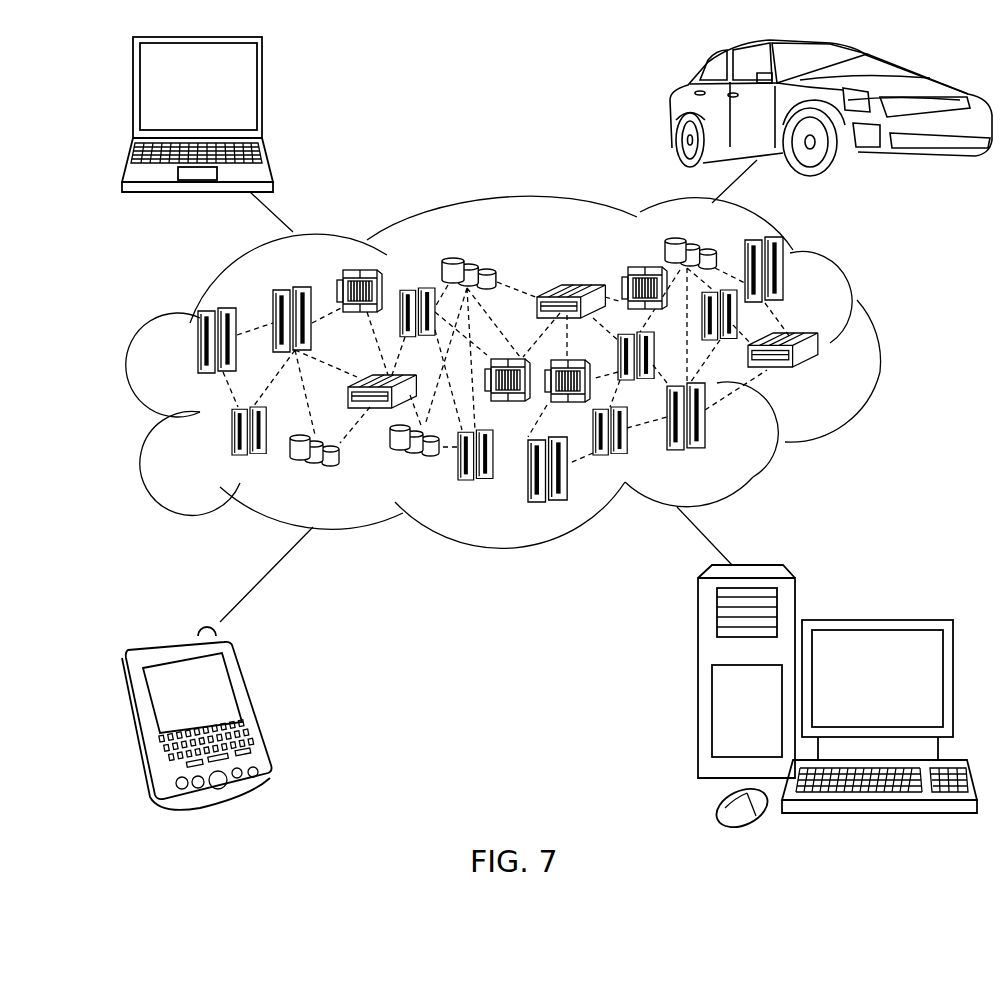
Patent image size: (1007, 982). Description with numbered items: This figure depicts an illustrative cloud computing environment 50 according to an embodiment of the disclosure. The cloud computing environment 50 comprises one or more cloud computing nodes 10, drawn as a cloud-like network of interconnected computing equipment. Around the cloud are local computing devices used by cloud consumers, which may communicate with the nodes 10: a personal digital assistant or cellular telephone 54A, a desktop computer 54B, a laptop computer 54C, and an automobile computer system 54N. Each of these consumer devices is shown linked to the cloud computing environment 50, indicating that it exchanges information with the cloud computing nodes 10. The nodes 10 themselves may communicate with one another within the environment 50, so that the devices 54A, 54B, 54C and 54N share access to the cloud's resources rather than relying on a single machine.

The cloud computing node 10 is at (822, 377).
The cloud computing environment 50 is at (526, 391).
The personal digital assistant or cellular telephone 54A is at (255, 707).
The desktop computer 54B is at (873, 620).
The laptop computer 54C is at (262, 92).
The automobile computer system 54N is at (670, 109).